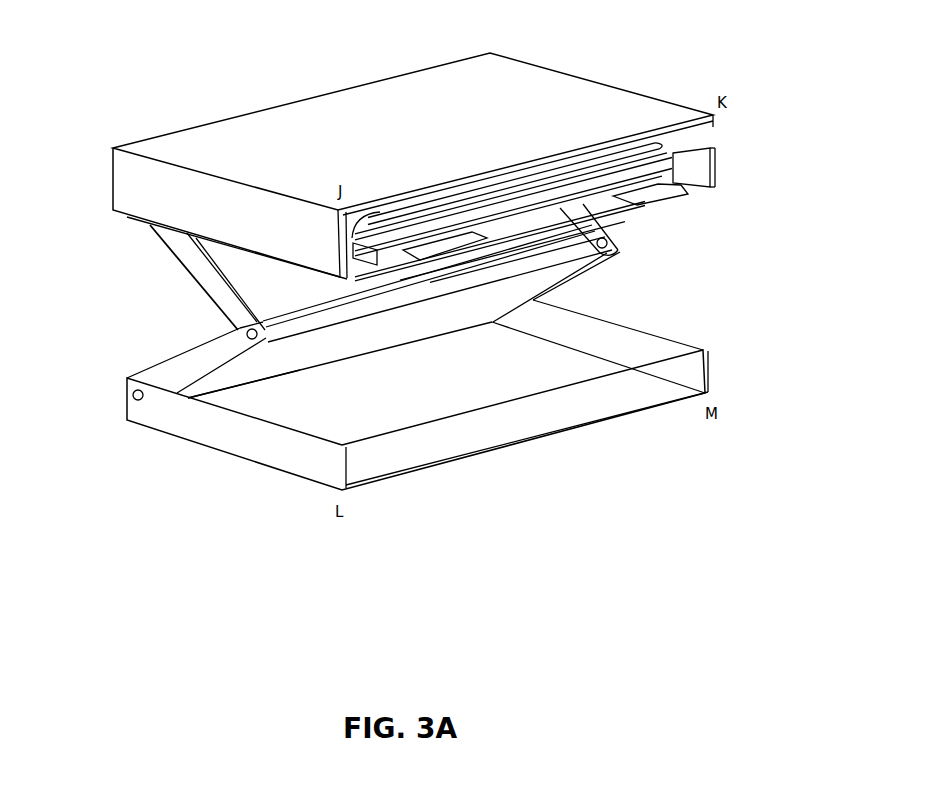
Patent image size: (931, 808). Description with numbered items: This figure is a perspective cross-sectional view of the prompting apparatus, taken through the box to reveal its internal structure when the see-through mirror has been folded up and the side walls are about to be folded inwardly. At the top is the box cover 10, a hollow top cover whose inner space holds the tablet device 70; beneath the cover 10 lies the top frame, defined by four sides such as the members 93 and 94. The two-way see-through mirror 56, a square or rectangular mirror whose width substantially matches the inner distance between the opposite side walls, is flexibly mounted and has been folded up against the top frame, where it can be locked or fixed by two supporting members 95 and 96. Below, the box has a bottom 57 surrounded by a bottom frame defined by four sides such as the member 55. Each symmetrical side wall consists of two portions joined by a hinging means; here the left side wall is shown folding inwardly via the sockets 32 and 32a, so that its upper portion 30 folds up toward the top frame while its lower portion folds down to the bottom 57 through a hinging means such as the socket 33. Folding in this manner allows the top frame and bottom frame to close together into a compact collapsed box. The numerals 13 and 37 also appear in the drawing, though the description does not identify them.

The box cover 10 is at (288, 132).
The front wall of upper panel 13 is at (135, 172).
The top frame member 93 is at (127, 217).
The first scissor arm 37 is at (182, 256).
The upper portion of side wall 30 is at (240, 270).
The socket 32 is at (246, 337).
The socket 32a is at (620, 253).
The two-way see-through mirror 56 is at (592, 195).
The socket 33 is at (130, 397).
The bottom frame member 55 is at (287, 457).
The bottom 57 is at (303, 400).
The tablet device 70 is at (710, 145).
The top frame member 94 is at (692, 168).
The supporting member 95 is at (672, 200).
The supporting member 96 is at (483, 233).